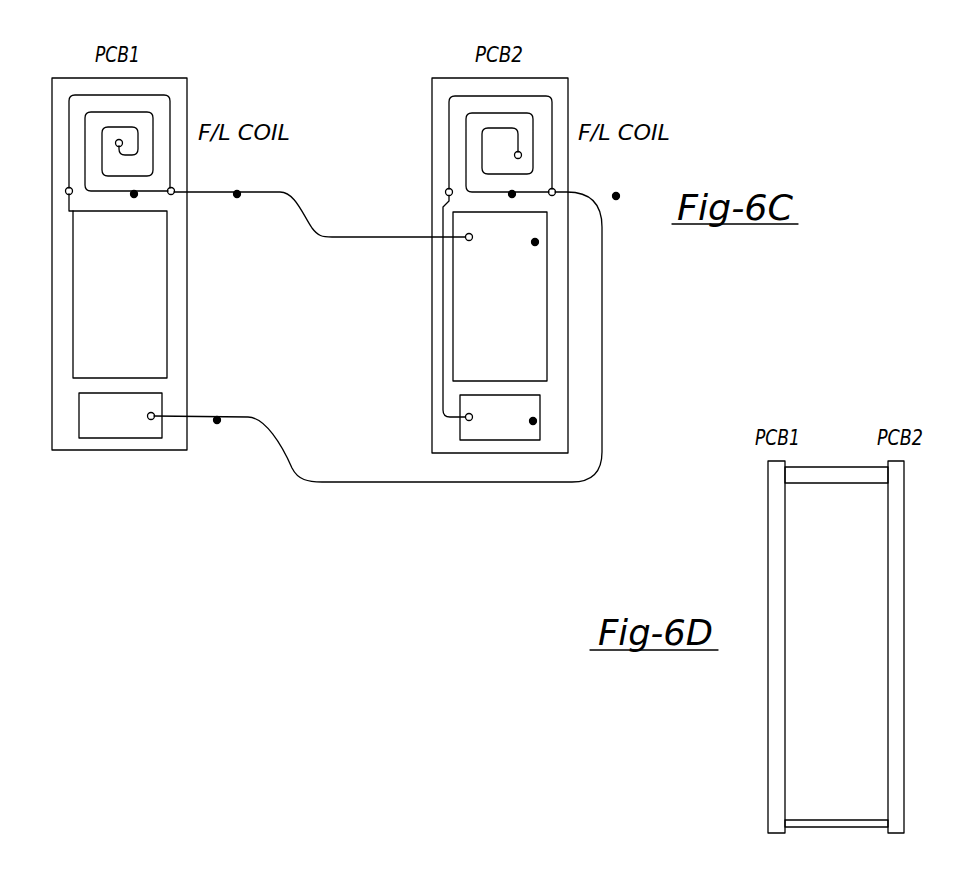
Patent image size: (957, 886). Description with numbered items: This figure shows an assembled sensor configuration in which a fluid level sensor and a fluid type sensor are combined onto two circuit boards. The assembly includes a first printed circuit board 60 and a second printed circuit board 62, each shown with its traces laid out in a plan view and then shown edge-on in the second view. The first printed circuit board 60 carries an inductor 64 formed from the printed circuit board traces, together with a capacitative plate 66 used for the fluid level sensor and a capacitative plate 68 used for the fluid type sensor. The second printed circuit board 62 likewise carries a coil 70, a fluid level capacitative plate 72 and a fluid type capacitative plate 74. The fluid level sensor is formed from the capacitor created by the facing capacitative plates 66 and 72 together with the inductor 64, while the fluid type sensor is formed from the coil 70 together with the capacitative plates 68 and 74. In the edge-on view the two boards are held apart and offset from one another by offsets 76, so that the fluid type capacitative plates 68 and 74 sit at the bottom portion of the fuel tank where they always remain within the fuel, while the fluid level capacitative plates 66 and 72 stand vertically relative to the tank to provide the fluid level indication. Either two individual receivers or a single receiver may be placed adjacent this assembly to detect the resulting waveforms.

In FIG. 6C, the first printed circuit board 60 is at (175, 333).
In FIG. 6C, the second printed circuit board 62 is at (555, 317).
In FIG. 6C, the inductor 64 is at (171, 108).
In FIG. 6C, the capacitative plate 66 is at (153, 243).
In FIG. 6C, the capacitative plate 68 is at (152, 404).
In FIG. 6C, the coil 70 is at (534, 127).
In FIG. 6C, the fluid level capacitative plate 72 is at (535, 253).
In FIG. 6C, the fluid type capacitative plate 74 is at (533, 421).
In FIG. 6D, the offsets 76 is at (833, 828).